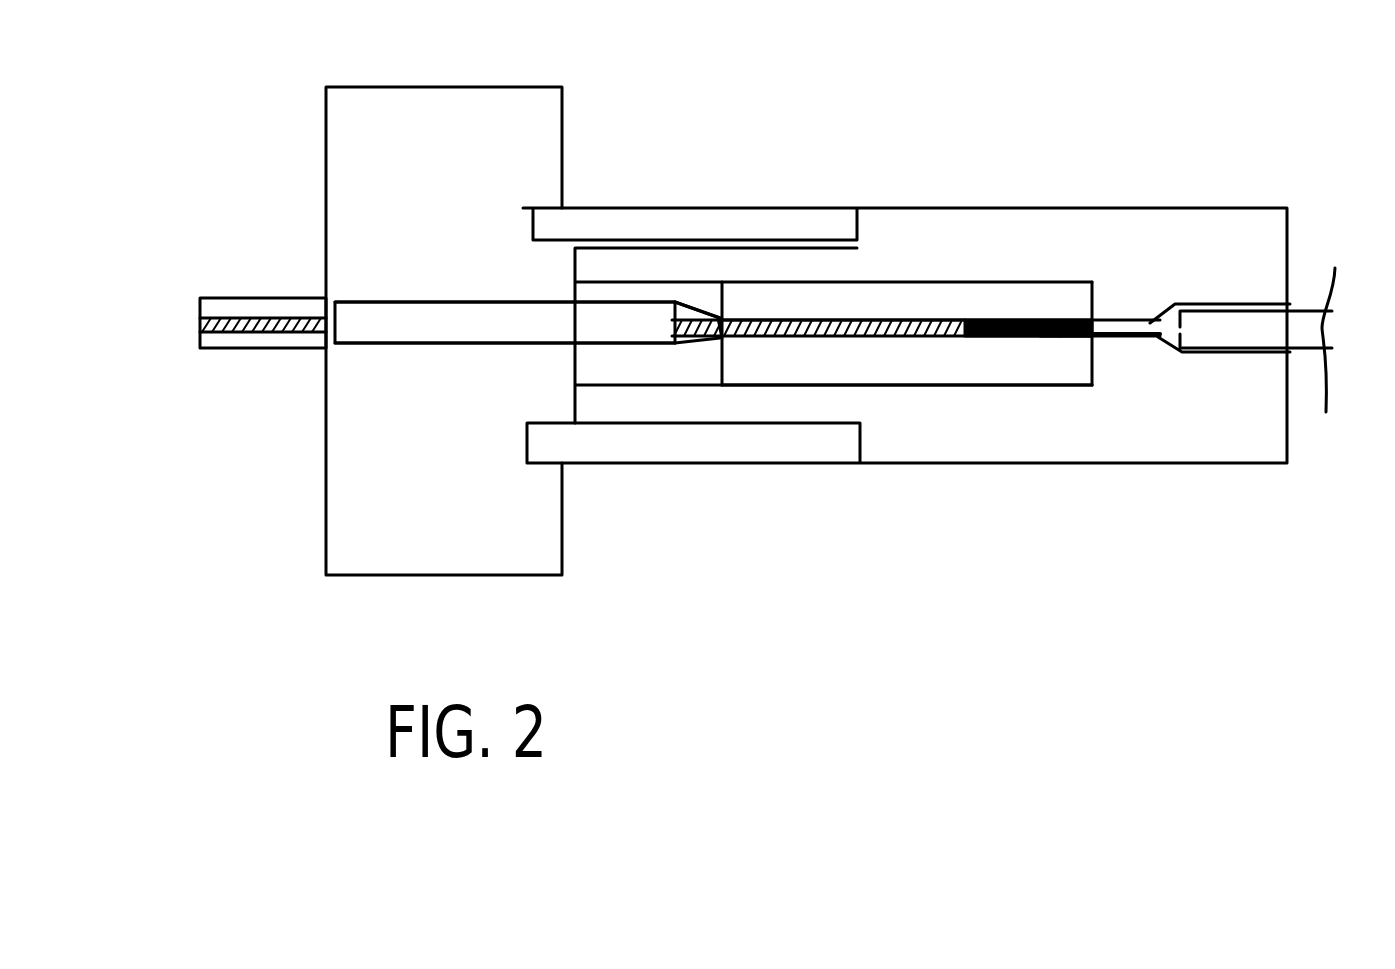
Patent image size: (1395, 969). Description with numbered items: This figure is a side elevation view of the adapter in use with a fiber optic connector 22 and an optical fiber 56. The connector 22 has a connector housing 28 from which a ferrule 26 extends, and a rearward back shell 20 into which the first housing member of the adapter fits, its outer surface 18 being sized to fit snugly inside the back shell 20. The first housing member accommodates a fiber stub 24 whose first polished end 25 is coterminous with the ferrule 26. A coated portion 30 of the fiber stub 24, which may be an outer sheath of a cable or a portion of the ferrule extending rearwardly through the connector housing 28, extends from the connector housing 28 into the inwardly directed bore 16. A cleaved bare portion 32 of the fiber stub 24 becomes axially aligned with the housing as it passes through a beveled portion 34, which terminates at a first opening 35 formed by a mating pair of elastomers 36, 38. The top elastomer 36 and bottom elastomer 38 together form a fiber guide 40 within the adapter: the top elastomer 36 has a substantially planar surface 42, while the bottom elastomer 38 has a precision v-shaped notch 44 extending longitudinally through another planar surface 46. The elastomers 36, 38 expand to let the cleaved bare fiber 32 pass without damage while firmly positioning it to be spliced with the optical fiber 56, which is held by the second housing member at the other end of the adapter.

The inwardly directed bore 16 is at (632, 345).
The outer surface 18 is at (720, 320).
The rearward back shell 20 is at (675, 426).
The fiber optic connector 22 is at (213, 560).
The fiber stub 24 is at (366, 293).
The first polished end 25 is at (197, 323).
The ferrule 26 is at (230, 298).
The connector housing 28 is at (326, 385).
The coated portion 30 is at (428, 302).
The cleaved bare portion 32 is at (782, 320).
The beveled portion 34 is at (690, 297).
The first opening 35 is at (720, 337).
The top elastomer 36 is at (923, 302).
The bottom elastomer 38 is at (940, 372).
The fiber guide 40 is at (987, 338).
The substantially planar surface 42 is at (1020, 322).
The precision v-shaped notch 44 is at (1047, 338).
The planar surface 46 is at (1068, 338).
The optical fiber 56 is at (1298, 302).